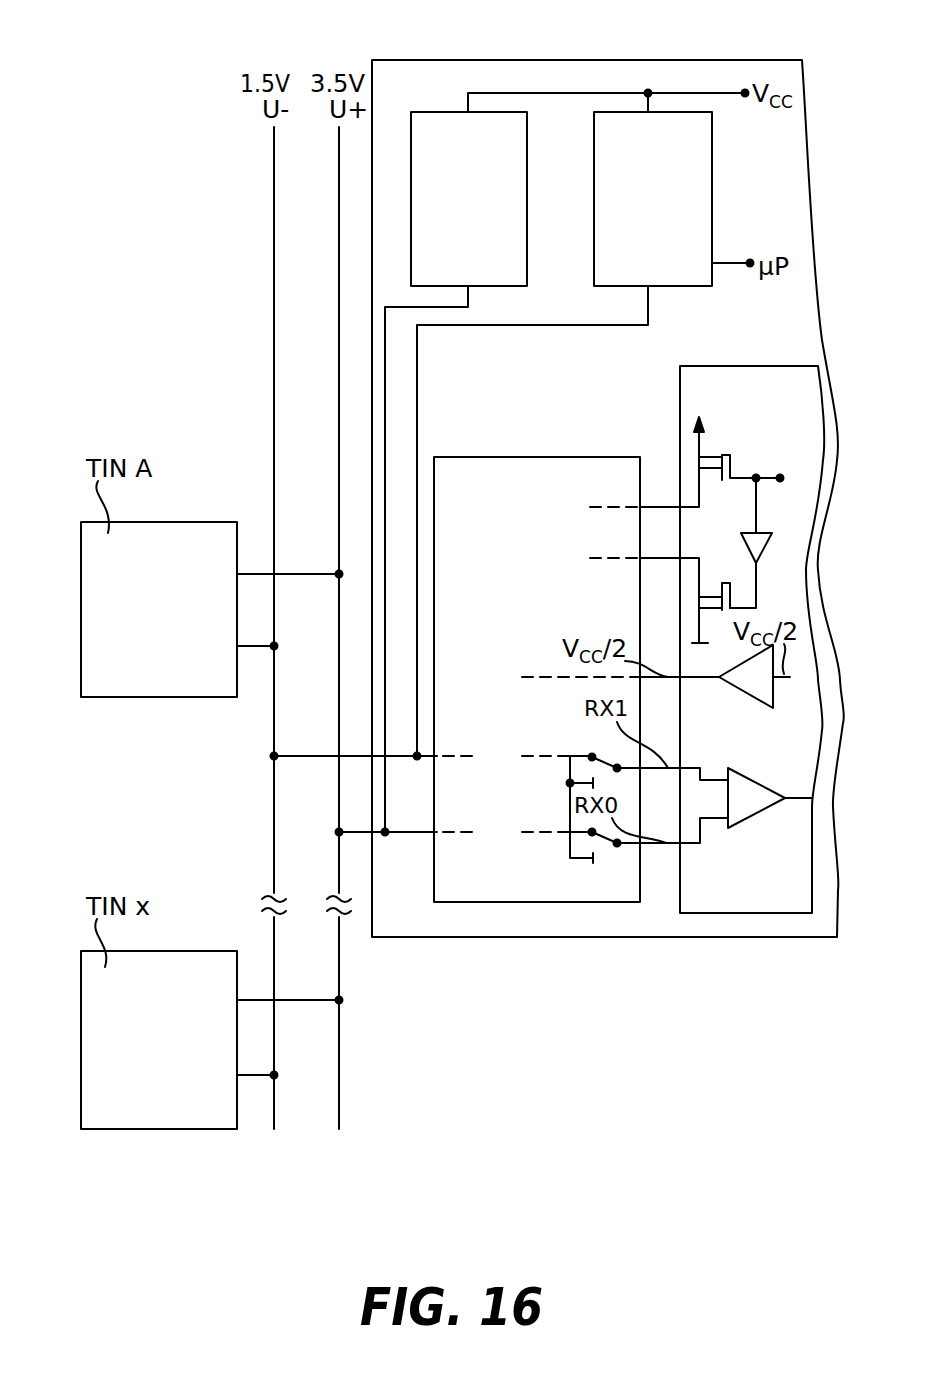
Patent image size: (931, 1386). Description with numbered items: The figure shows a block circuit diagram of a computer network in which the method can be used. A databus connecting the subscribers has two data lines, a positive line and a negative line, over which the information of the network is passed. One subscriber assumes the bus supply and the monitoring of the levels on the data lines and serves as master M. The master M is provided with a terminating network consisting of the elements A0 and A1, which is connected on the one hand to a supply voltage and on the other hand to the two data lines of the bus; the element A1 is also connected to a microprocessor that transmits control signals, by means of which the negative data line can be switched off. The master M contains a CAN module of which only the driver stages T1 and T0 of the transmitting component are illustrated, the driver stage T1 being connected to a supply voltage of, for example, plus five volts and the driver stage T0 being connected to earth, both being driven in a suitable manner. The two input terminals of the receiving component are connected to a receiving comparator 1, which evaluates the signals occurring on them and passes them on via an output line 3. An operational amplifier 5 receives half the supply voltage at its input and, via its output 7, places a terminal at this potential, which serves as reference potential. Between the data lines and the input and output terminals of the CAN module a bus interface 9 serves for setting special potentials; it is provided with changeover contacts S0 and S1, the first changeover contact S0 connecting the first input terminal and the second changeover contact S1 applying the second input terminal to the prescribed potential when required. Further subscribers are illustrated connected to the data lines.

The receiving comparator 1 is at (746, 812).
The output line 3 is at (786, 798).
The operational amplifier 5 is at (745, 690).
The output 7 is at (705, 677).
The bus interface 9 is at (460, 897).
The master M is at (399, 72).
The terminating network element A0 is at (469, 199).
The terminating network element A1 is at (653, 199).
The driver stage T1 is at (730, 455).
The driver stage T0 is at (730, 583).
The second changeover contact S1 is at (649, 751).
The first changeover contact S0 is at (659, 848).